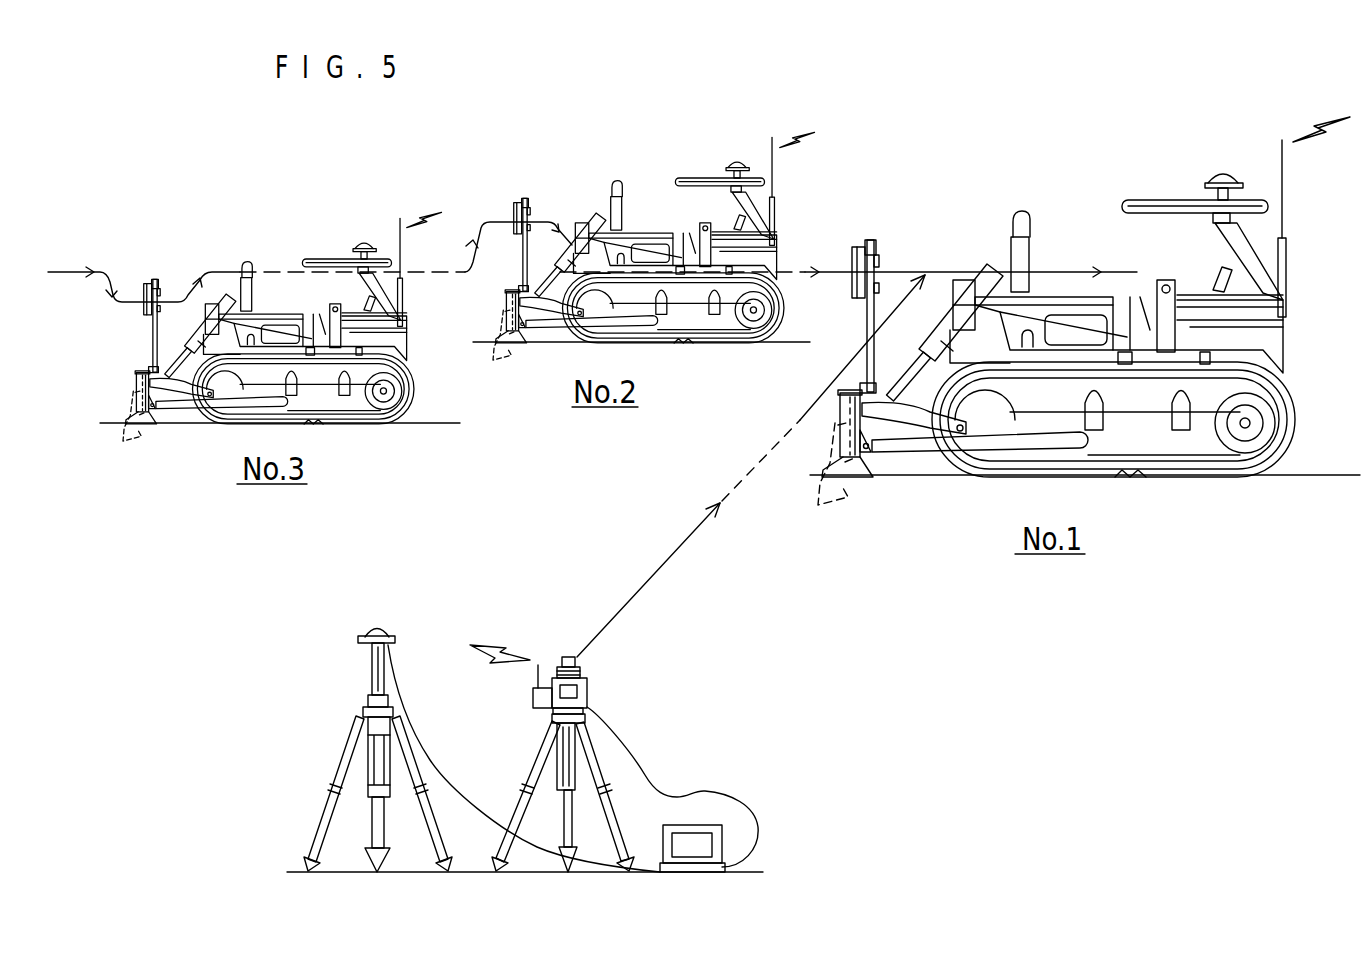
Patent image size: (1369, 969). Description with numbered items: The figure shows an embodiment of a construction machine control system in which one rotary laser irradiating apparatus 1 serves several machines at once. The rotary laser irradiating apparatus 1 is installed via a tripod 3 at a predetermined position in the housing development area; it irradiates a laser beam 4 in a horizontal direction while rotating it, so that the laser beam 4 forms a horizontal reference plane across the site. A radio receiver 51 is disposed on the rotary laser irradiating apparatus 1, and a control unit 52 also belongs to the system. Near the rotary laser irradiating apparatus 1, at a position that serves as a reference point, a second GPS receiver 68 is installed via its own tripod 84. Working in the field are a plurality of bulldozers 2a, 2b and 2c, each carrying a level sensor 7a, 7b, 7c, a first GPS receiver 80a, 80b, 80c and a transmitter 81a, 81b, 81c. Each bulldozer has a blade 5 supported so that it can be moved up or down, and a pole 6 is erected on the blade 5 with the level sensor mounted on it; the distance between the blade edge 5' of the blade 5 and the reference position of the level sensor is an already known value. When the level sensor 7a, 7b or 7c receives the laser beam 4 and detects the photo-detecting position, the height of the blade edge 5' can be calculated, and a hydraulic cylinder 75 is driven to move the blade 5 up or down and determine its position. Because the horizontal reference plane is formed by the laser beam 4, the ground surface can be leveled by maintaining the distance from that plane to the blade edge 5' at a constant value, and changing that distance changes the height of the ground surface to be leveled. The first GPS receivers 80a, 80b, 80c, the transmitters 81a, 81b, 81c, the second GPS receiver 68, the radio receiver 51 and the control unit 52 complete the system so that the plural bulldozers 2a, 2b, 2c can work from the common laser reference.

The rotary laser irradiating apparatus 1 is at (590, 688).
The tripod 3 is at (598, 753).
The laser beam 4 is at (650, 578).
The blade 5 is at (801, 430).
The blade edge 5' is at (815, 472).
The pole 6 is at (862, 322).
The level sensor 7a is at (857, 240).
The level sensor 7b is at (522, 200).
The level sensor 7c is at (153, 286).
The bulldozer 2a is at (1088, 237).
The bulldozer 2b is at (643, 162).
The bulldozer 2c is at (253, 248).
The hydraulic cylinder 75 is at (935, 305).
The first GPS receiver 80a is at (1228, 170).
The first GPS receiver 80b is at (737, 165).
The first GPS receiver 80c is at (362, 247).
The transmitter 81a is at (1285, 270).
The transmitter 81b is at (777, 181).
The transmitter 81c is at (402, 262).
The radio receiver 51 is at (533, 695).
The control unit 52 is at (697, 827).
The second GPS receiver 68 is at (383, 627).
The tripod 84 is at (340, 760).